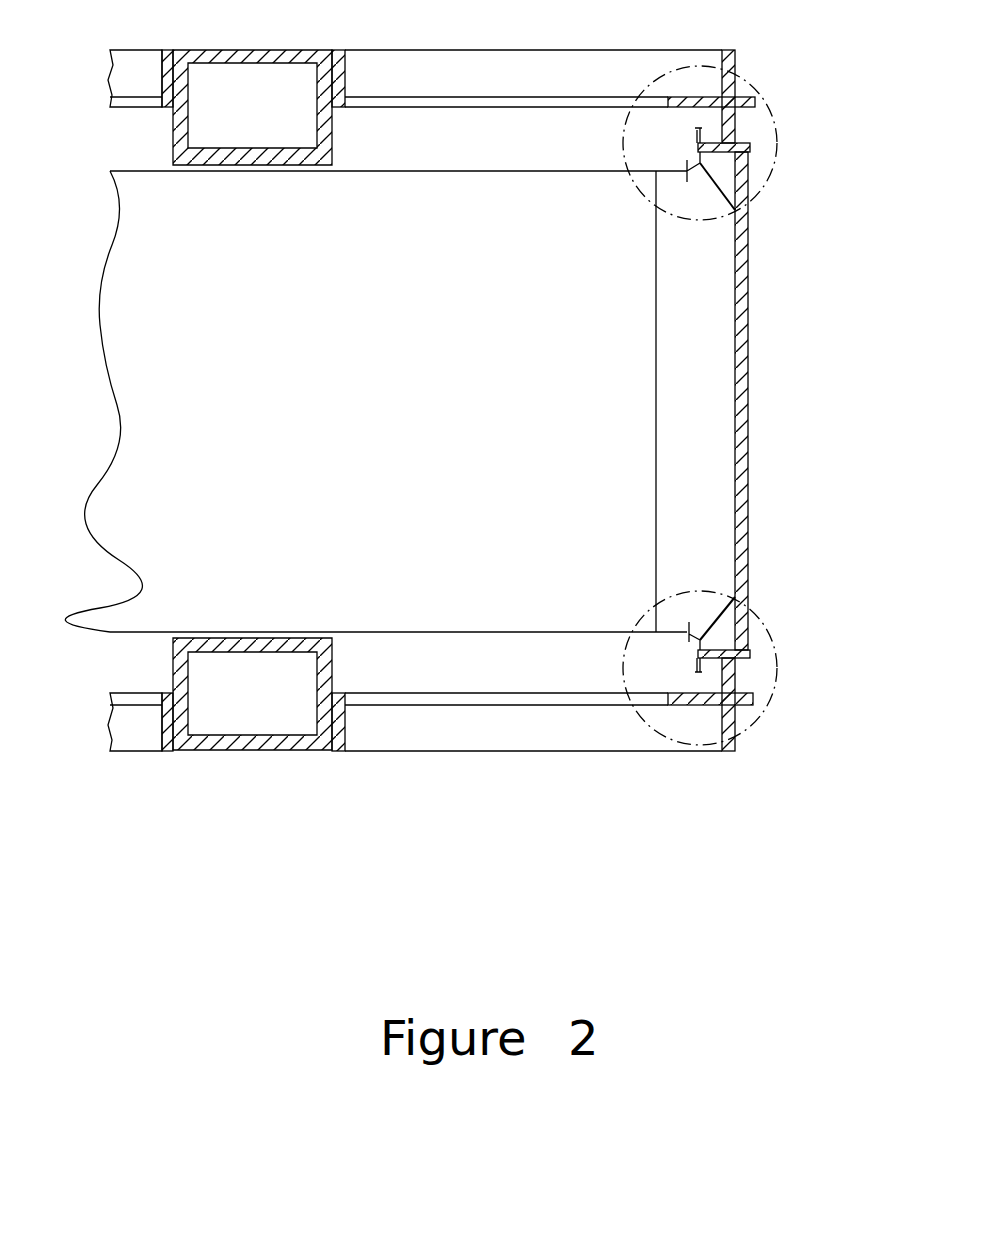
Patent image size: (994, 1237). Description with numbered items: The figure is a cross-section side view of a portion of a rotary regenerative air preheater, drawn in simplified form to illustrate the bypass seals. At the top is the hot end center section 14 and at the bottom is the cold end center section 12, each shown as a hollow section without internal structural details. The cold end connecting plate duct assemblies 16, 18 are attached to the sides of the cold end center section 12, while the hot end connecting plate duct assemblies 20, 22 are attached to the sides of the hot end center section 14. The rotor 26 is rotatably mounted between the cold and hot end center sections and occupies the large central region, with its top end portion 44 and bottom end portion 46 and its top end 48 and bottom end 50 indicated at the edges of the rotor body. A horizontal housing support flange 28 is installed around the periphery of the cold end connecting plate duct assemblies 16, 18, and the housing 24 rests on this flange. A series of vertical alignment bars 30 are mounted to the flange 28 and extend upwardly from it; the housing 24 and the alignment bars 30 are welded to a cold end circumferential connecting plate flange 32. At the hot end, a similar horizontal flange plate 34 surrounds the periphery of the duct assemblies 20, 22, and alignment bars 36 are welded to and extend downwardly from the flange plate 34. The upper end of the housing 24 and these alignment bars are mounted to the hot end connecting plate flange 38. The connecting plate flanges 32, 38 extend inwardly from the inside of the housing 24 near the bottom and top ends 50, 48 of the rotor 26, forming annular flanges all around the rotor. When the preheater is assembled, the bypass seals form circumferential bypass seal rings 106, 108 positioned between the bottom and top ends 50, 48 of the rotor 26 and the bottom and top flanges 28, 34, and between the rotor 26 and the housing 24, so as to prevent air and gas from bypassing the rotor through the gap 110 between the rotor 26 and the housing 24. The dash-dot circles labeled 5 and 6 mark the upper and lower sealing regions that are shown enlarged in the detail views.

The detail circle for Figure 5 is at (753, 87).
The detail circle for Figure 6 is at (753, 722).
The cold end center section 12 is at (270, 738).
The hot end center section 14 is at (270, 58).
The cold end connecting plate duct assembly 16 is at (137, 740).
The cold end connecting plate duct assembly 18 is at (512, 745).
The hot end connecting plate duct assembly 20 is at (137, 60).
The hot end connecting plate duct assembly 22 is at (412, 60).
The housing 24 is at (734, 370).
The rotor 26 is at (149, 532).
The horizontal housing support flange 28 is at (682, 698).
The vertical alignment bars 30 is at (733, 677).
The cold end circumferential connecting plate flange 32 is at (741, 650).
The horizontal flange plate 34 is at (683, 100).
The alignment bars 36 is at (738, 127).
The hot end connecting plate flange 38 is at (752, 197).
The top end portion 44 is at (507, 193).
The bottom end portion 46 is at (507, 608).
The top end 48 is at (402, 170).
The bottom end 50 is at (402, 633).
The circumferential bypass seal ring 106 is at (735, 600).
The circumferential bypass seal ring 108 is at (740, 217).
The gap 110 is at (722, 421).